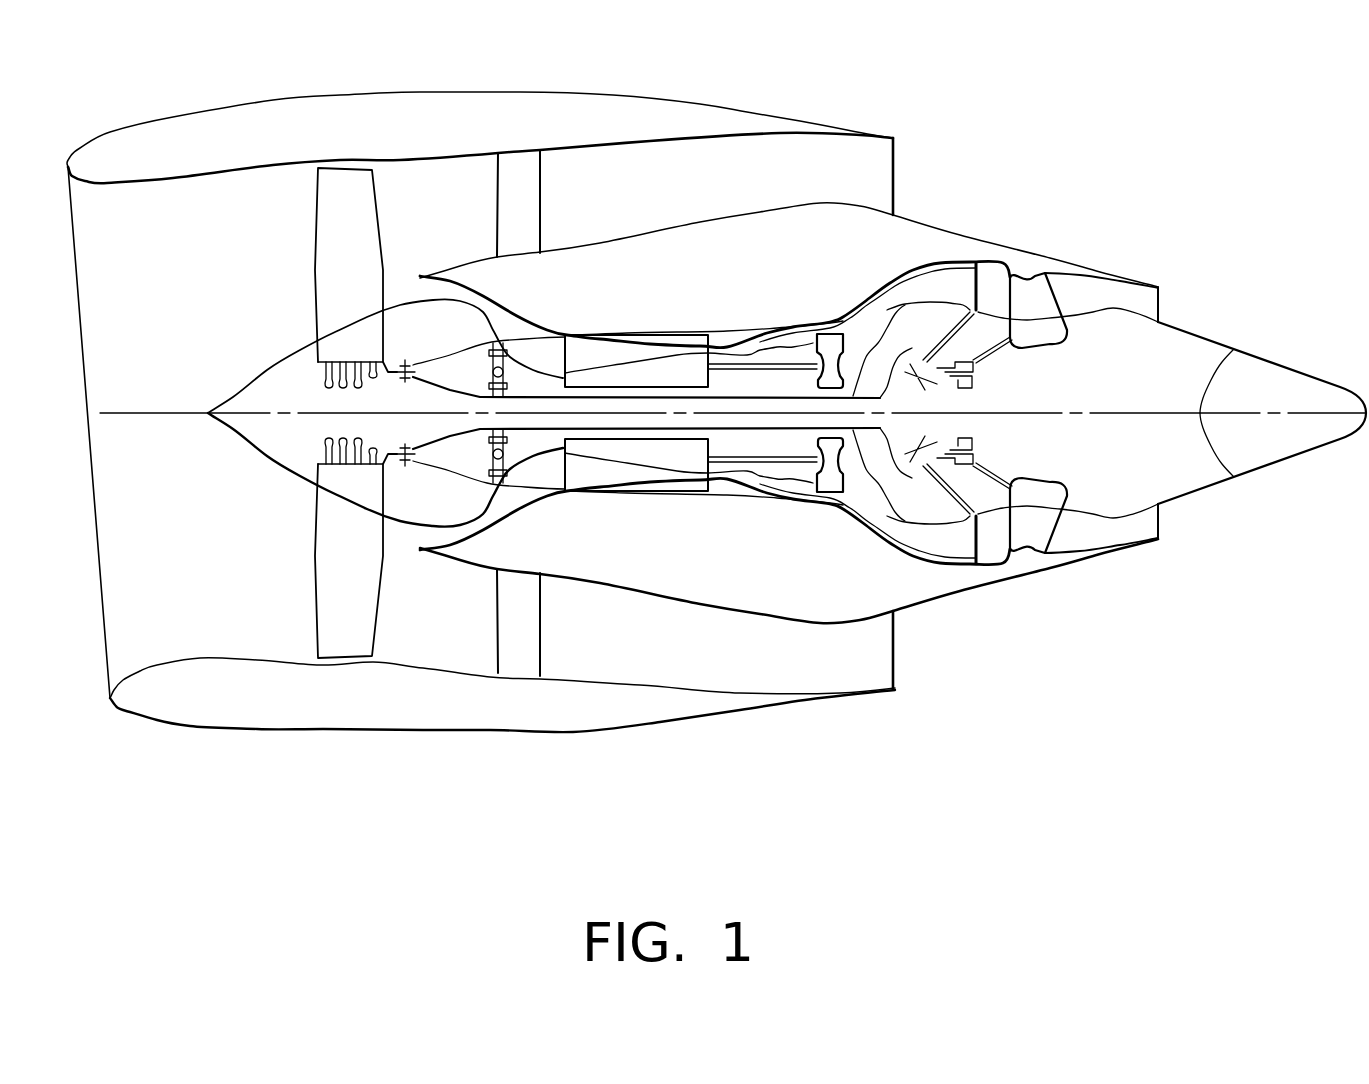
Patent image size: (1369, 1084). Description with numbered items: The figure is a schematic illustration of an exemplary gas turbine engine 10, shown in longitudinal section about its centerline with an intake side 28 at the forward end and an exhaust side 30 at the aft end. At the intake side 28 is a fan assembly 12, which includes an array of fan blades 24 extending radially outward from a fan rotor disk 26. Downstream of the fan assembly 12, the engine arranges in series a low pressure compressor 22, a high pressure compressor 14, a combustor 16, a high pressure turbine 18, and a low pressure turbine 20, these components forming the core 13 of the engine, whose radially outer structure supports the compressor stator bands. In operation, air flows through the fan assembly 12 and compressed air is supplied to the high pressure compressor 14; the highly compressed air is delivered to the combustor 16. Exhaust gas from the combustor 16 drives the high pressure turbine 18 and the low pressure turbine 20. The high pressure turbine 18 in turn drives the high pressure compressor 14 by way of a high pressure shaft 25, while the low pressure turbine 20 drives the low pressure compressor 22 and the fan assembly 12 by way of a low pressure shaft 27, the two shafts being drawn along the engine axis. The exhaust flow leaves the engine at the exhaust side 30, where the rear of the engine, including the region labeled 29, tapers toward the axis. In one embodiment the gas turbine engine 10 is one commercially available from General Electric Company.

The gas turbine engine 10 is at (853, 102).
The fan assembly 12 is at (333, 597).
The core 13 is at (693, 247).
The high pressure compressor 14 is at (588, 353).
The combustor 16 is at (779, 347).
The high pressure turbine 18 is at (820, 507).
The low pressure turbine 20 is at (931, 283).
The low pressure compressor 22 is at (467, 297).
The fan blades 24 is at (340, 237).
The high pressure shaft 25 is at (737, 460).
The fan rotor disk 26 is at (334, 498).
The low pressure shaft 27 is at (858, 375).
The intake side 28 is at (98, 222).
The exhaust plug 29 is at (1236, 348).
The exhaust side 30 is at (933, 175).